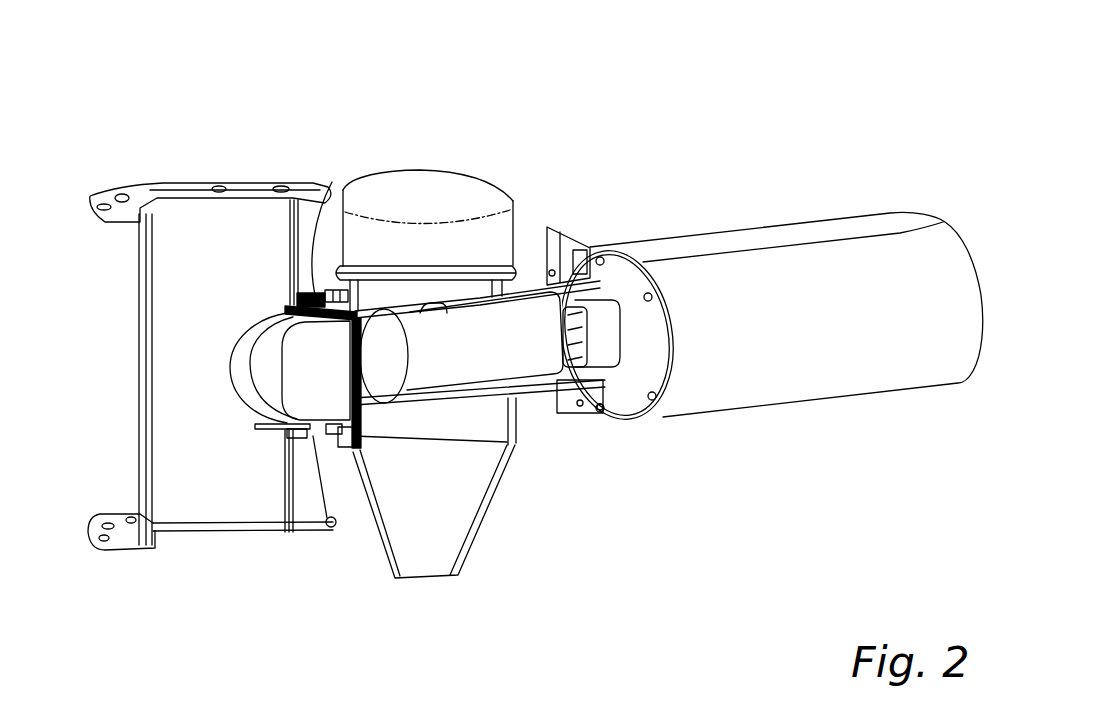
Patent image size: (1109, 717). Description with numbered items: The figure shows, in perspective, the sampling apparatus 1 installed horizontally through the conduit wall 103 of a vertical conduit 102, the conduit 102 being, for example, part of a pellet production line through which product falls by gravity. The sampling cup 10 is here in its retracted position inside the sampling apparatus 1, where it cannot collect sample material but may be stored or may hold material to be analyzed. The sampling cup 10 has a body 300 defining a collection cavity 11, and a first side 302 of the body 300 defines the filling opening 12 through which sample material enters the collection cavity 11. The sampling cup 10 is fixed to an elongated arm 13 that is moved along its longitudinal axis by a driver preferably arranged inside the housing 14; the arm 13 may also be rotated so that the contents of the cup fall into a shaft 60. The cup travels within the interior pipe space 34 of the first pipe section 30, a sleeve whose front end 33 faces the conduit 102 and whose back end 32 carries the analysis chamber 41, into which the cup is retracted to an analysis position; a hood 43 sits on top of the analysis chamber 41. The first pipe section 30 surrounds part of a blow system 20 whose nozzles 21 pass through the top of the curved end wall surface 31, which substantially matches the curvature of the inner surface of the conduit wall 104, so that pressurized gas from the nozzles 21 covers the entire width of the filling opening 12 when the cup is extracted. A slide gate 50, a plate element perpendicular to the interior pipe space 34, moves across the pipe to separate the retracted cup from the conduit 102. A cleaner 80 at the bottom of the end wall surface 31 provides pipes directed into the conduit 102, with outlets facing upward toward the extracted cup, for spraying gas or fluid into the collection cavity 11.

The sampling apparatus 1 is at (860, 127).
The sampling cup 10 is at (530, 370).
The collection cavity 11 is at (408, 313).
The filling opening 12 is at (412, 308).
The elongated arm 13 is at (573, 338).
The housing 14 is at (820, 240).
The blow system 20 is at (268, 283).
The nozzles 21 is at (266, 292).
The first pipe section 30 is at (332, 182).
The end wall surface 31 is at (238, 352).
The back end 32 is at (347, 313).
The front end 33 is at (324, 528).
The interior pipe space 34 is at (258, 385).
The analysis chamber 41 is at (443, 288).
The hood 43 is at (455, 200).
The slide gate 50 is at (338, 388).
The shaft 60 is at (430, 557).
The cleaner 80 is at (208, 527).
The conduit 102 is at (239, 160).
The conduit wall 103 is at (150, 490).
The inner surface of the conduit wall 104 is at (246, 444).
The body 300 is at (450, 377).
The first side 302 is at (463, 300).